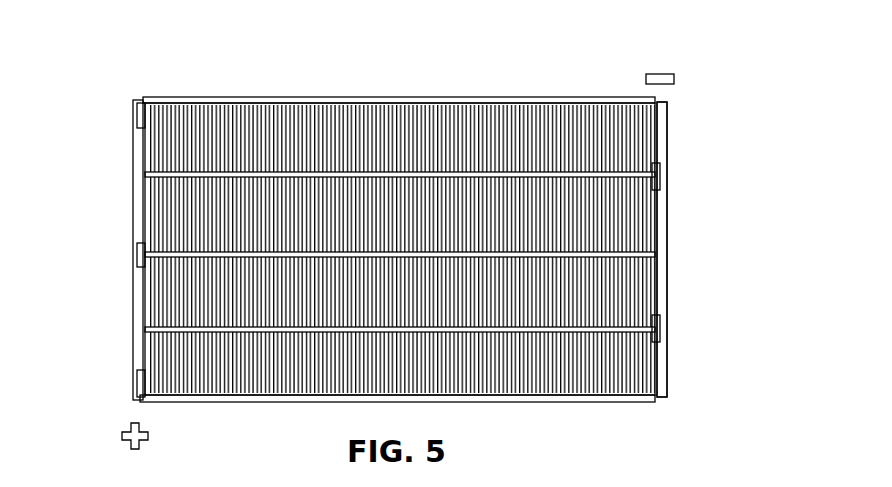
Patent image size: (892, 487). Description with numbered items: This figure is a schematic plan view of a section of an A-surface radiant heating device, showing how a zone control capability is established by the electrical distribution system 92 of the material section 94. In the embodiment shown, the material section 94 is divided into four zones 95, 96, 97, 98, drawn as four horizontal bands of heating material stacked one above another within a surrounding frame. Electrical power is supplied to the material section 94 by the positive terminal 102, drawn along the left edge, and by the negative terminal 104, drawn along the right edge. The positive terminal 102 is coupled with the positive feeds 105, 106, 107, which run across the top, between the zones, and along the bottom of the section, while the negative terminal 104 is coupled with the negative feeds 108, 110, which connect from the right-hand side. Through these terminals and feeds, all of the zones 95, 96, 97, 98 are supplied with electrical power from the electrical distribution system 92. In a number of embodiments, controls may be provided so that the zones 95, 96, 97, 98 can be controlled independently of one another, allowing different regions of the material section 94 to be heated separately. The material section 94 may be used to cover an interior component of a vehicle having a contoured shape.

The electrical distribution system 92 is at (355, 78).
The material section 94 is at (674, 140).
The zone 95 is at (479, 138).
The zone 96 is at (633, 211).
The zone 97 is at (620, 285).
The zone 98 is at (632, 357).
The positive terminal 102 is at (133, 313).
The negative terminal 104 is at (665, 207).
The positive feed 105 is at (203, 102).
The positive feed 106 is at (183, 256).
The positive feed 107 is at (188, 401).
The negative feed 108 is at (637, 168).
The negative feed 110 is at (625, 328).